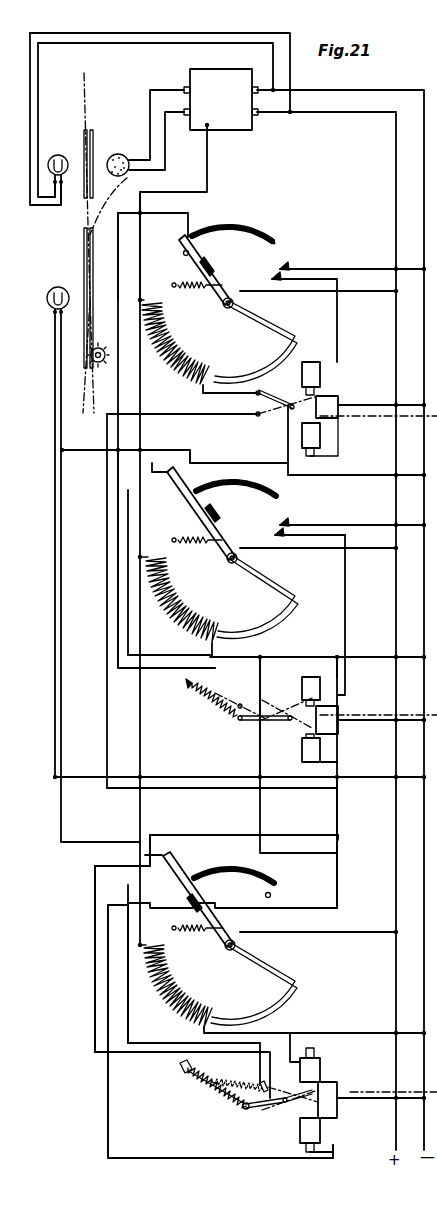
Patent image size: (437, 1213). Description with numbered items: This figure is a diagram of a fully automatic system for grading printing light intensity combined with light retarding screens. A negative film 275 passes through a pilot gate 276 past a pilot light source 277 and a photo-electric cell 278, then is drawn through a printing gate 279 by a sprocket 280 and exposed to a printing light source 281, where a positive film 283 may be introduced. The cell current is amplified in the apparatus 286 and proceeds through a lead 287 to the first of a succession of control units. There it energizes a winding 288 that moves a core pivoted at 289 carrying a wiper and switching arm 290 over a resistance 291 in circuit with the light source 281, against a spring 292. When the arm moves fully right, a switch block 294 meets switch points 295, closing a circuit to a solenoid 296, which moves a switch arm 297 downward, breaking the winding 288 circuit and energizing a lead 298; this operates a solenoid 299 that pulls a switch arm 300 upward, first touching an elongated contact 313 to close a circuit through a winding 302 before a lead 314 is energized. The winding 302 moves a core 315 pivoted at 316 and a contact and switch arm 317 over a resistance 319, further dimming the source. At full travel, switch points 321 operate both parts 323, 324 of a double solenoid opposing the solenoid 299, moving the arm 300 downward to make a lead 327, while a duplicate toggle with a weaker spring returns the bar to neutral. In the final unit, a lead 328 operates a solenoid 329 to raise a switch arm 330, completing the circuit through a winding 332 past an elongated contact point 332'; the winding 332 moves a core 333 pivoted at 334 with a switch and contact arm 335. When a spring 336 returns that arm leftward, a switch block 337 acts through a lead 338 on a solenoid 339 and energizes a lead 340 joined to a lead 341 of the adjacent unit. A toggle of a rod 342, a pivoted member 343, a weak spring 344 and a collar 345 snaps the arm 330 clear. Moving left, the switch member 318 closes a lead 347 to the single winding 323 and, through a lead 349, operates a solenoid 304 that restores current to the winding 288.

The negative film 275 is at (87, 105).
The pilot gate 276 is at (94, 150).
The pilot light source 277 is at (58, 155).
The photo-electric cell 278 is at (110, 158).
The printing gate 279 is at (95, 238).
The sprocket 280 is at (106, 358).
The printing light source 281 is at (56, 287).
The positive film 283 is at (110, 205).
The amplifying apparatus 286 is at (217, 67).
The lead 287 is at (208, 167).
The winding 288 is at (183, 346).
The pivot 289 is at (216, 276).
The wiper and switching arm 290 is at (224, 230).
The resistance 291 is at (274, 237).
The spring 292 is at (180, 282).
The switch block 294 is at (195, 238).
The switch points 295 is at (289, 256).
The solenoid 296 is at (321, 372).
The switch arm 297 is at (281, 338).
The lead 298 is at (210, 416).
The solenoid 299 is at (321, 750).
The switch arm 300 is at (252, 722).
The winding 302 is at (176, 592).
The solenoid 304 is at (321, 435).
The elongated contact 313 is at (258, 698).
The lead 314 is at (192, 655).
The core 315 is at (275, 622).
The pivot 316 is at (238, 560).
The contact and switch arm 317 is at (212, 530).
The switch member 318 is at (166, 473).
The resistance 319 is at (277, 495).
The switch points 321 is at (215, 512).
The solenoid winding 323 is at (292, 722).
The solenoid winding 324 is at (321, 685).
The lead 327 is at (215, 706).
The lead 328 is at (255, 838).
The solenoid 329 is at (321, 1131).
The switch arm 330 is at (290, 1105).
The winding 332 is at (176, 986).
The elongated contact point 332' is at (240, 1073).
The core 333 is at (290, 998).
The pivot 334 is at (237, 947).
The switch and contact arm 335 is at (202, 889).
The spring 336 is at (208, 932).
The switch block 337 is at (163, 858).
The lead 338 is at (95, 976).
The solenoid 339 is at (321, 1068).
The lead 340 is at (340, 835).
The lead 341 is at (340, 800).
The rod 342 is at (262, 1107).
The pivoted member 343 is at (188, 1078).
The spring 344 is at (218, 1095).
The collar 345 is at (243, 1109).
The lead 347 is at (118, 565).
The lead 349 is at (225, 463).